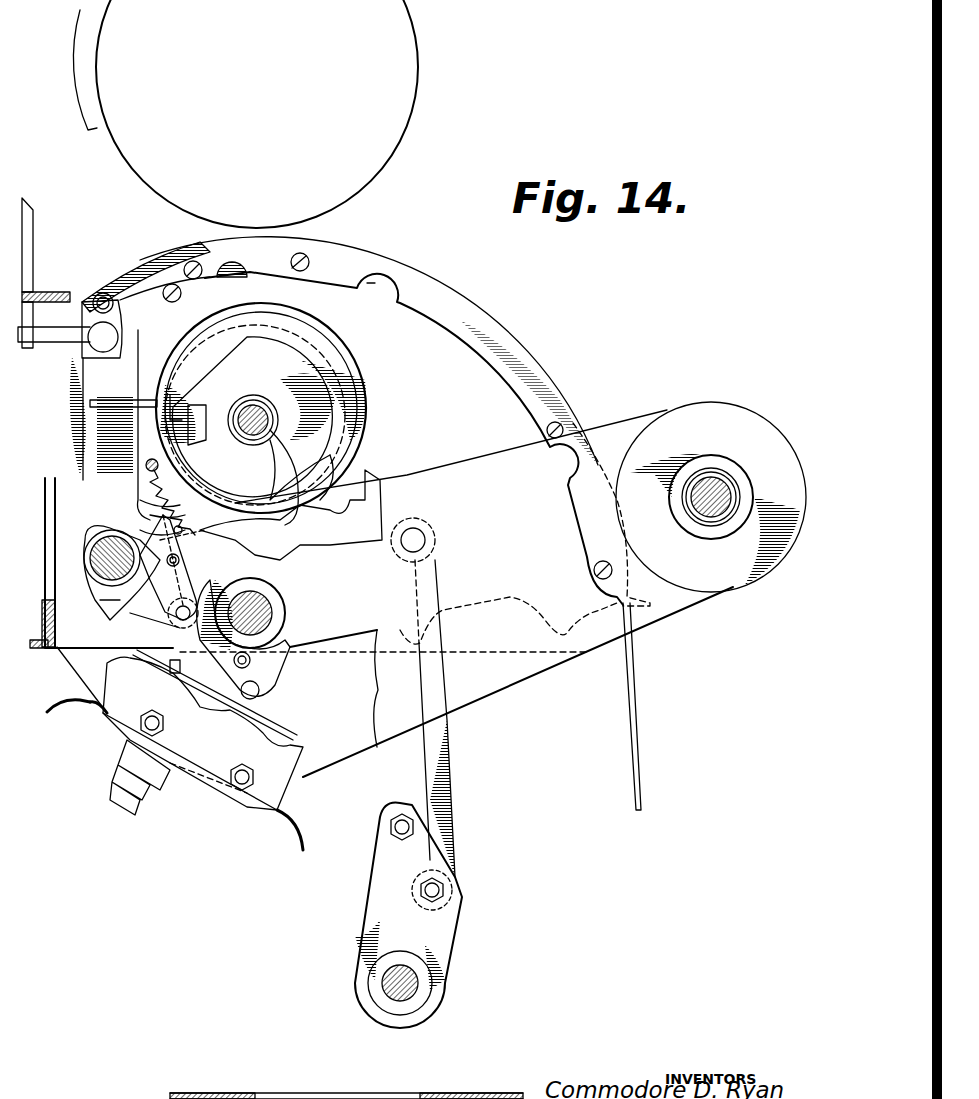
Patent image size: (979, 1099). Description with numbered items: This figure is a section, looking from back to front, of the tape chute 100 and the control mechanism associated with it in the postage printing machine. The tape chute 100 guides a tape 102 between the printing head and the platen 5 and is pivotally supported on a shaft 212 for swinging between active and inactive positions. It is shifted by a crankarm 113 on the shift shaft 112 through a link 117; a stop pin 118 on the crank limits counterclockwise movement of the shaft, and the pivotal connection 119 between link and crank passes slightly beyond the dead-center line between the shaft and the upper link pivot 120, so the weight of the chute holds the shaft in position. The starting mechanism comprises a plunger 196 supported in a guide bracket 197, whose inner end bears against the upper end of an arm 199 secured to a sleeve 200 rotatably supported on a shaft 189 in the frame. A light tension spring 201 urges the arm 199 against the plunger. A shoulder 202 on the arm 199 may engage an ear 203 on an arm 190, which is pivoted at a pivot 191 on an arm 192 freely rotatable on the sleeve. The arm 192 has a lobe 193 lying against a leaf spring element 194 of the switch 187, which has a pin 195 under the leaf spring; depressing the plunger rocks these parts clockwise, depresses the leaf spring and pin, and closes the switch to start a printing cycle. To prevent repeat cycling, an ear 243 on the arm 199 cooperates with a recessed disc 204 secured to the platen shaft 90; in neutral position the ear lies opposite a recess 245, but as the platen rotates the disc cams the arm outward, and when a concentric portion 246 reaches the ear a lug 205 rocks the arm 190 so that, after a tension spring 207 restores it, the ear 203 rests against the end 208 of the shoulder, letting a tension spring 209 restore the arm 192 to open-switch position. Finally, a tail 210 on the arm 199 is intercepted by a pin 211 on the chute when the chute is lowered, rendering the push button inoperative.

The platen 5 is at (70, 405).
The platen shaft 90 is at (255, 418).
The tape chute 100 is at (470, 318).
The tape 102 is at (638, 760).
The shift shaft 112 is at (405, 985).
The crankarm 113 is at (385, 928).
The link 117 is at (442, 760).
The stop pin 118 is at (398, 820).
The pivotal connection 119 is at (440, 888).
The upper link pivot 120 is at (426, 540).
The switch 187 is at (290, 748).
The shaft 189 is at (92, 552).
The arm 190 is at (300, 458).
The pivot 191 is at (185, 605).
The arm 192 is at (98, 600).
The lobe 193 is at (130, 616).
The leaf spring element 194 is at (132, 652).
The pin 195 is at (172, 670).
The plunger 196 is at (45, 342).
The guide bracket 197 is at (45, 292).
The arm 199 is at (95, 450).
The sleeve 200 is at (100, 562).
The tension spring 201 is at (145, 495).
The shoulder 202 is at (173, 536).
The ear 203 is at (160, 555).
The recessed disc 204 is at (262, 352).
The lug 205 is at (200, 420).
The tension spring 207 is at (150, 512).
The end 208 is at (150, 528).
The tension spring 209 is at (180, 490).
The tail 210 is at (237, 670).
The pin 211 is at (260, 690).
The shaft 212 is at (255, 600).
The ear 243 is at (143, 400).
The recess 245 is at (188, 390).
The concentric portion 246 is at (320, 372).